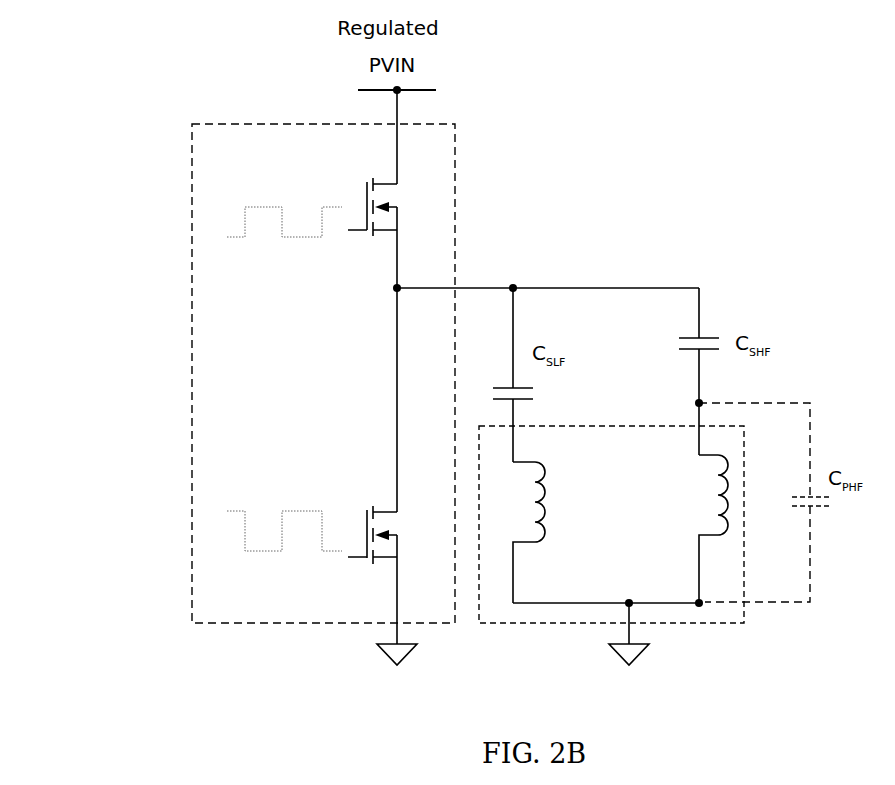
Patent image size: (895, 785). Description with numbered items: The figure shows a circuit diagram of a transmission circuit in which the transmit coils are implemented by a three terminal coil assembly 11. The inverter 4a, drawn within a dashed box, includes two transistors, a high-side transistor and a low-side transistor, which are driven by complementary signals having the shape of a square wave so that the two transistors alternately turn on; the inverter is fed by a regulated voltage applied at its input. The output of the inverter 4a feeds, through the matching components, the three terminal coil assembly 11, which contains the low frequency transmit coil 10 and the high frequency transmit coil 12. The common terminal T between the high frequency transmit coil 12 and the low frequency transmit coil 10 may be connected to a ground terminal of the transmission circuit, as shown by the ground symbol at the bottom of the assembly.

The inverter 4a is at (197, 118).
The low frequency transmit coil 10 is at (542, 495).
The three terminal coil assembly 11 is at (673, 424).
The high frequency transmit coil 12 is at (725, 527).
The common terminal T is at (650, 603).